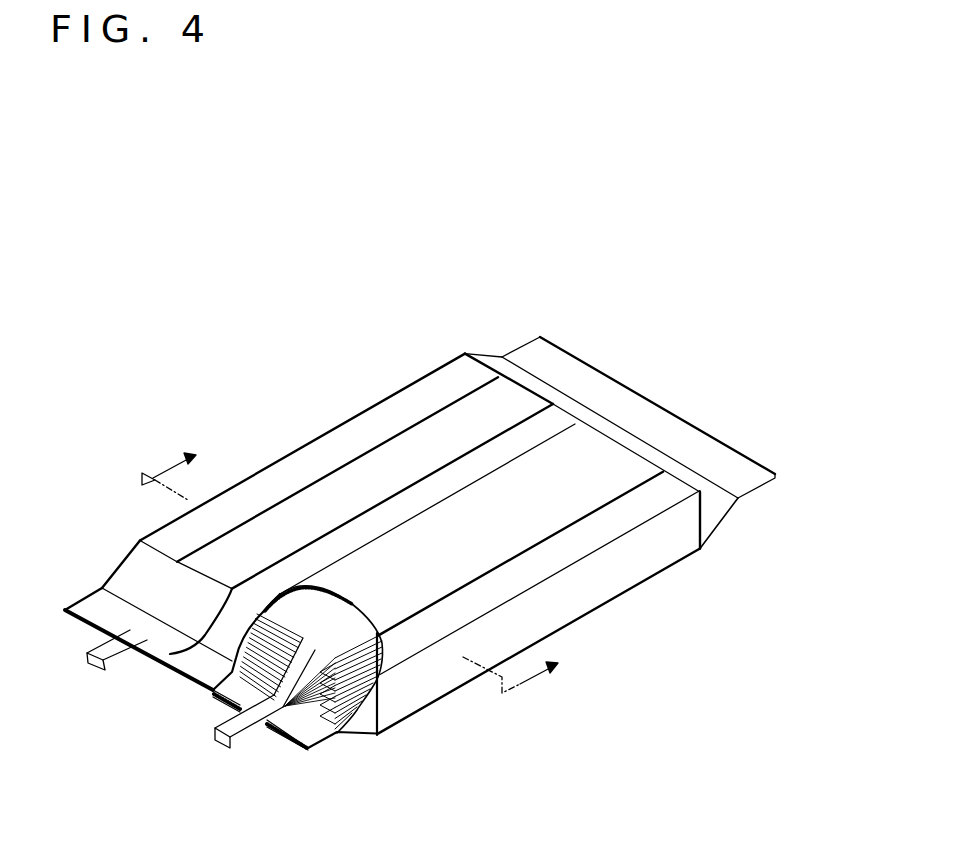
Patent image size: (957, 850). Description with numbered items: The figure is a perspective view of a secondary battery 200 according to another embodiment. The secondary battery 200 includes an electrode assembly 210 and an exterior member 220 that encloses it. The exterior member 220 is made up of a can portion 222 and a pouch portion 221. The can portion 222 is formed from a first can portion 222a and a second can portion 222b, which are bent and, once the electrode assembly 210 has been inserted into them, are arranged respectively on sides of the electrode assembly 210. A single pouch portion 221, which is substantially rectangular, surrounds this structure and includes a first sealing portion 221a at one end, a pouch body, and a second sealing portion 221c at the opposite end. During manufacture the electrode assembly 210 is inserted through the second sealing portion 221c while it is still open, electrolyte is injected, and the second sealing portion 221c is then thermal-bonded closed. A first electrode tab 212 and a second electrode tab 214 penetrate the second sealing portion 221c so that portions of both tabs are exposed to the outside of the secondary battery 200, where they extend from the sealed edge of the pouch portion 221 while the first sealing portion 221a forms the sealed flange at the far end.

The secondary battery 200 is at (180, 354).
The electrode assembly 210 is at (332, 628).
The first electrode tab 212 is at (100, 661).
The second electrode tab 214 is at (244, 732).
The exterior member 220 is at (367, 331).
The pouch portion 221 is at (430, 455).
The first sealing portion 221a is at (742, 441).
The second sealing portion 221c is at (146, 676).
The can portion 222 is at (312, 370).
The first can portion 222a is at (237, 498).
The second can portion 222b is at (485, 600).